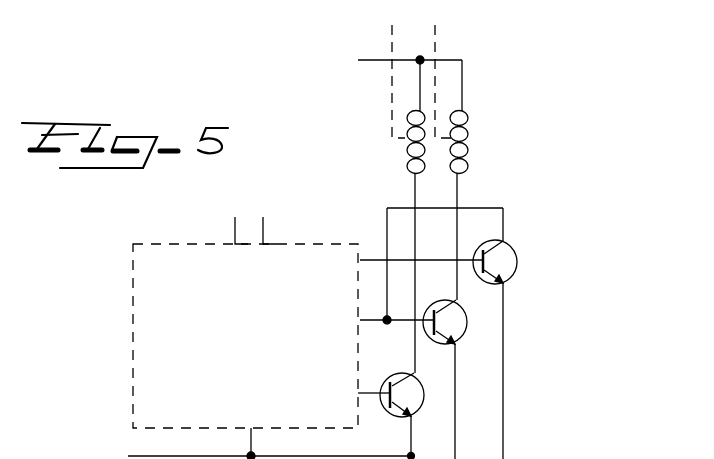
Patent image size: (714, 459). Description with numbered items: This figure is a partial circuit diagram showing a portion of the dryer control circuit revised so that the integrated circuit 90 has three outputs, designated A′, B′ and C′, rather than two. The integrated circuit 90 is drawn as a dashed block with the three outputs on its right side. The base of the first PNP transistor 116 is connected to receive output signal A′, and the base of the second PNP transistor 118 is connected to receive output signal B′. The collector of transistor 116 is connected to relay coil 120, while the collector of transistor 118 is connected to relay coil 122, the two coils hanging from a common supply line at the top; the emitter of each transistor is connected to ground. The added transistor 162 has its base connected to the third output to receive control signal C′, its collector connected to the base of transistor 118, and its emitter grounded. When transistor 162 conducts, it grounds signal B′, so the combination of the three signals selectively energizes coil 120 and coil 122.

The integrated circuit 90 is at (250, 339).
The first PNP transistor 116 is at (399, 418).
The second PNP transistor 118 is at (467, 326).
The relay coil 120 is at (405, 153).
The relay coil 122 is at (470, 160).
The transistor 162 is at (518, 252).